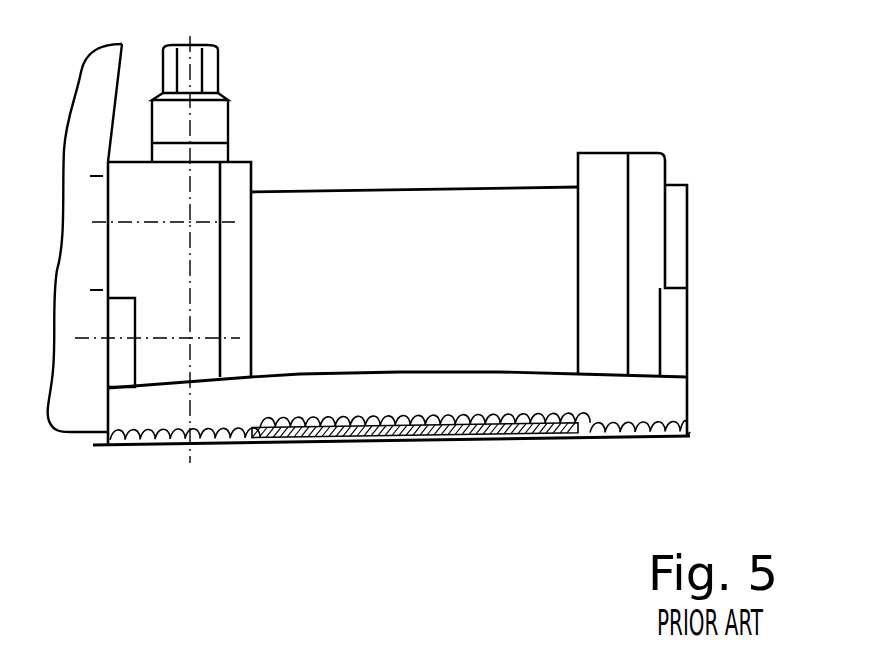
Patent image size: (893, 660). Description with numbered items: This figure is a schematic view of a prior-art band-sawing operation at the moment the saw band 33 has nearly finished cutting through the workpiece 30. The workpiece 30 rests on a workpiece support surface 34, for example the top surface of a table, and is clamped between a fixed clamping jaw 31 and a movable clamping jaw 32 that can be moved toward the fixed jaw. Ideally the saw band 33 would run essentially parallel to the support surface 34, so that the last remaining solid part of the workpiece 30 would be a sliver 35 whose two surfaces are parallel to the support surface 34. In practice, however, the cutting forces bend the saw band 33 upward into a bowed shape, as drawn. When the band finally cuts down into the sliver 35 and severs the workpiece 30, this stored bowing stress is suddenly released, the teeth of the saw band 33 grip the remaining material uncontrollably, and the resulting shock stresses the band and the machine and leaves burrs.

The workpiece 30 is at (386, 223).
The fixed clamping jaw 31 is at (237, 167).
The movable clamping jaw 32 is at (602, 168).
The saw band 33 is at (553, 398).
The workpiece support surface 34 is at (215, 444).
The sliver 35 is at (358, 441).